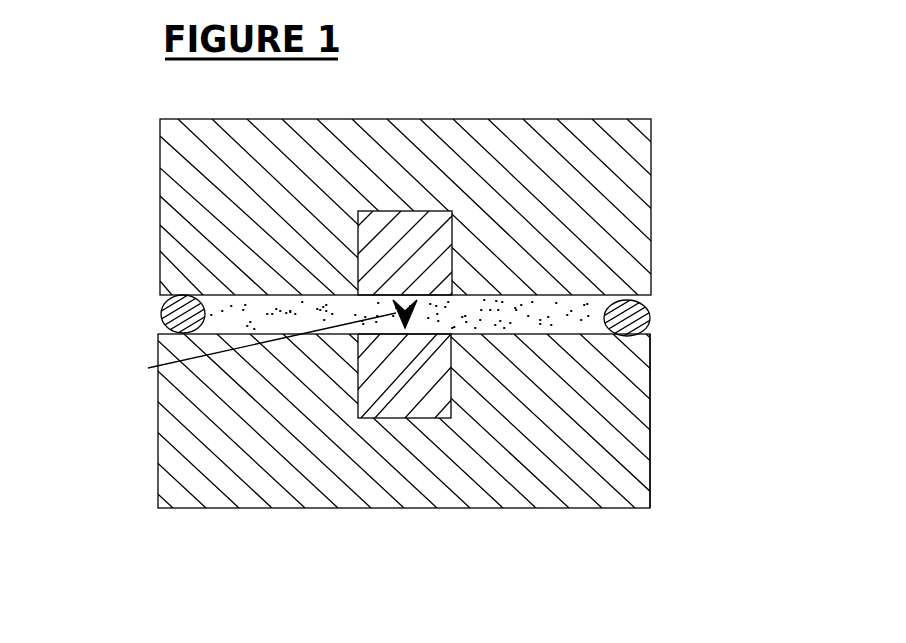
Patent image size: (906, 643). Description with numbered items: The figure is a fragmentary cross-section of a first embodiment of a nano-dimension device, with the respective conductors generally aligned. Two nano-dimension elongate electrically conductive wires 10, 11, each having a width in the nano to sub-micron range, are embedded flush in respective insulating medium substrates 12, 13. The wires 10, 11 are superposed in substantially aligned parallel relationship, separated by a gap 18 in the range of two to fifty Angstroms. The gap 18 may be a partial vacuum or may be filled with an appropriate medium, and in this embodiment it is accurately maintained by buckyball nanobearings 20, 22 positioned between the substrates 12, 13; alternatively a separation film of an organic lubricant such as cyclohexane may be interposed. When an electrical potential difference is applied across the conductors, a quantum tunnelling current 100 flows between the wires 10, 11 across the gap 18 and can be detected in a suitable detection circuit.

The nano-dimension elongate electrically conductive wire 10 is at (405, 211).
The nano-dimension elongate electrically conductive wire 11 is at (402, 418).
The insulating medium substrate 12 is at (216, 168).
The insulating medium substrate 13 is at (210, 427).
The gap 18 is at (650, 390).
The buckyball nanobearing 20 is at (165, 313).
The buckyball nanobearing 22 is at (650, 319).
The quantum tunnelling current 100 is at (255, 343).